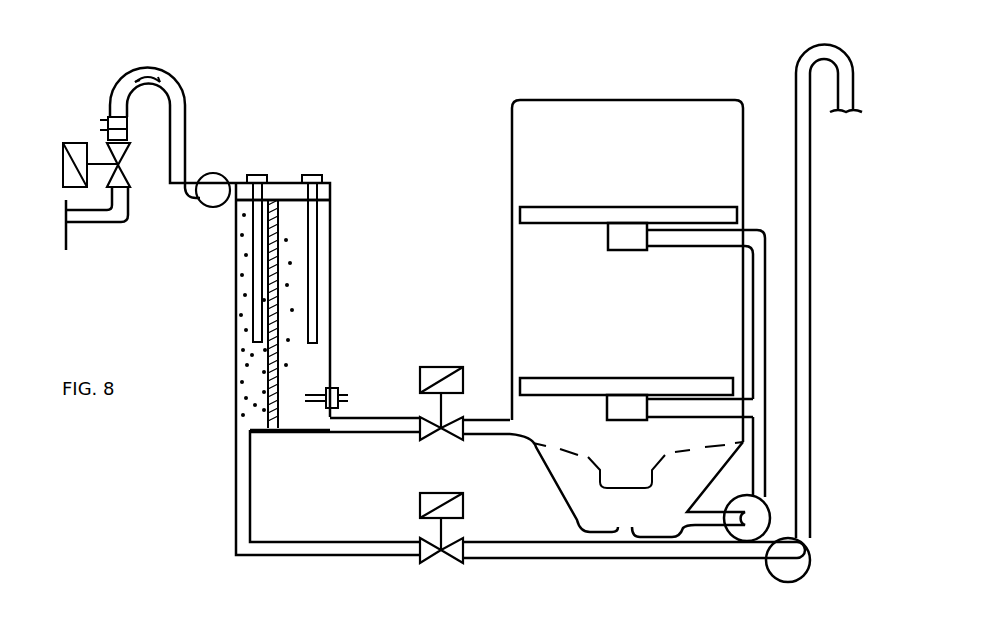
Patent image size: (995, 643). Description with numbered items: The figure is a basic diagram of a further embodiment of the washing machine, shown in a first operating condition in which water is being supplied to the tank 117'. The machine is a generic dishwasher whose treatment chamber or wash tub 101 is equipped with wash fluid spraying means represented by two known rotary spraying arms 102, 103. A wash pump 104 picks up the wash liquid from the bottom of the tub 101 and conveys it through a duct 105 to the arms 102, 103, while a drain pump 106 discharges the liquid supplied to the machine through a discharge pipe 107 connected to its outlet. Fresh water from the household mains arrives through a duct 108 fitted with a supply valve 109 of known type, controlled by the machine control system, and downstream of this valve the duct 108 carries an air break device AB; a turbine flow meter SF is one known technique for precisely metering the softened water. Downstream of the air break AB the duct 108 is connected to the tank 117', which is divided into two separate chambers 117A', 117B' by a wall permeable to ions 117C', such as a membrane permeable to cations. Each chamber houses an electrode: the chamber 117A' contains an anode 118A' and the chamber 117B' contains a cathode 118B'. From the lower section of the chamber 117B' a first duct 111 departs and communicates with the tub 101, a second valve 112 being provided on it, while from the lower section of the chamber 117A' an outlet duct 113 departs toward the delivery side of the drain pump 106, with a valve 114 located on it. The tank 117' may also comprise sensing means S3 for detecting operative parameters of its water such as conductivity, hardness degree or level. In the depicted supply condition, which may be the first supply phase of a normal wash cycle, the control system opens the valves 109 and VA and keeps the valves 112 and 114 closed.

The treatment chamber or wash tub 101 is at (628, 125).
The rotary spraying arm 102 is at (585, 207).
The rotary spraying arm 103 is at (578, 378).
The wash pump 104 is at (765, 505).
The duct 105 is at (768, 302).
The drain pump 106 is at (805, 555).
The discharge pipe 107 is at (800, 75).
The duct 108 is at (180, 138).
The supply valve 109 is at (75, 143).
The first duct 111 is at (383, 433).
The second valve 112 is at (437, 367).
The outlet duct 113 is at (236, 495).
The valve 114 is at (420, 530).
The tank 117' is at (309, 304).
The chamber 117A' is at (227, 314).
The chamber 117B' is at (371, 271).
The wall permeable to ions 117C' is at (312, 131).
The anode 118A' is at (283, 216).
The cathode 118B' is at (358, 227).
The air break device AB is at (152, 68).
The turbine flow meter SF is at (108, 117).
The valve VA is at (213, 208).
The sensing means S3 is at (335, 390).